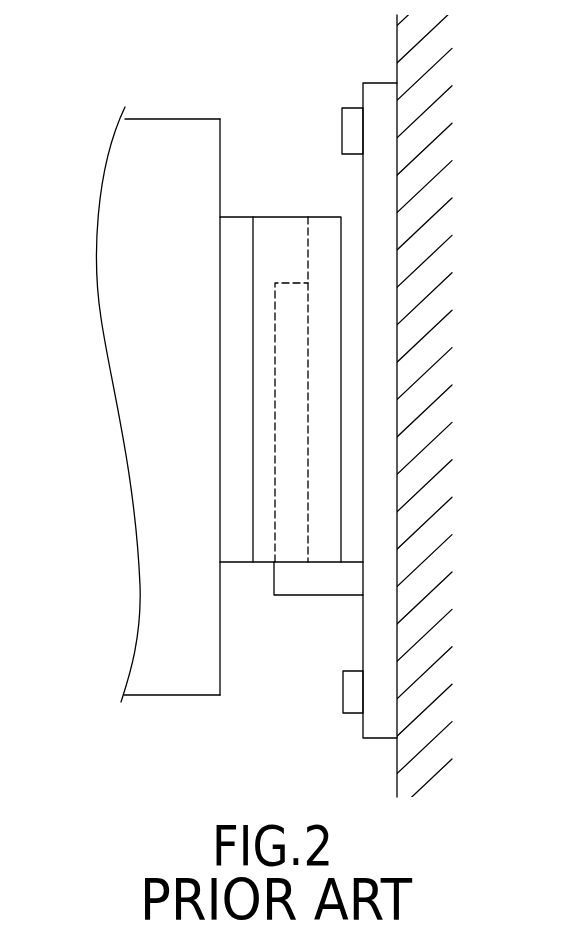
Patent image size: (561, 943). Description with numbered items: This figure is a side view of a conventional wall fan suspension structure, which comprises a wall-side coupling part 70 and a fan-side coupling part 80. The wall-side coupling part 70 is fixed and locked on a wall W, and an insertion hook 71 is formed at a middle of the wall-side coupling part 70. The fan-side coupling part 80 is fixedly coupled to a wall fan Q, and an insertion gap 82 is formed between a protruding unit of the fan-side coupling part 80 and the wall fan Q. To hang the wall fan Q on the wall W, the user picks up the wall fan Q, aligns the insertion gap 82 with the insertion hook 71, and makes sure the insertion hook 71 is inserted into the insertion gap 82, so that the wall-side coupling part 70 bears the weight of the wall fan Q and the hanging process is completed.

The wall fan Q is at (120, 237).
The wall W is at (433, 83).
The wall-side coupling part 70 is at (372, 100).
The insertion hook 71 is at (285, 300).
The fan-side coupling part 80 is at (236, 547).
The insertion gap 82 is at (270, 246).